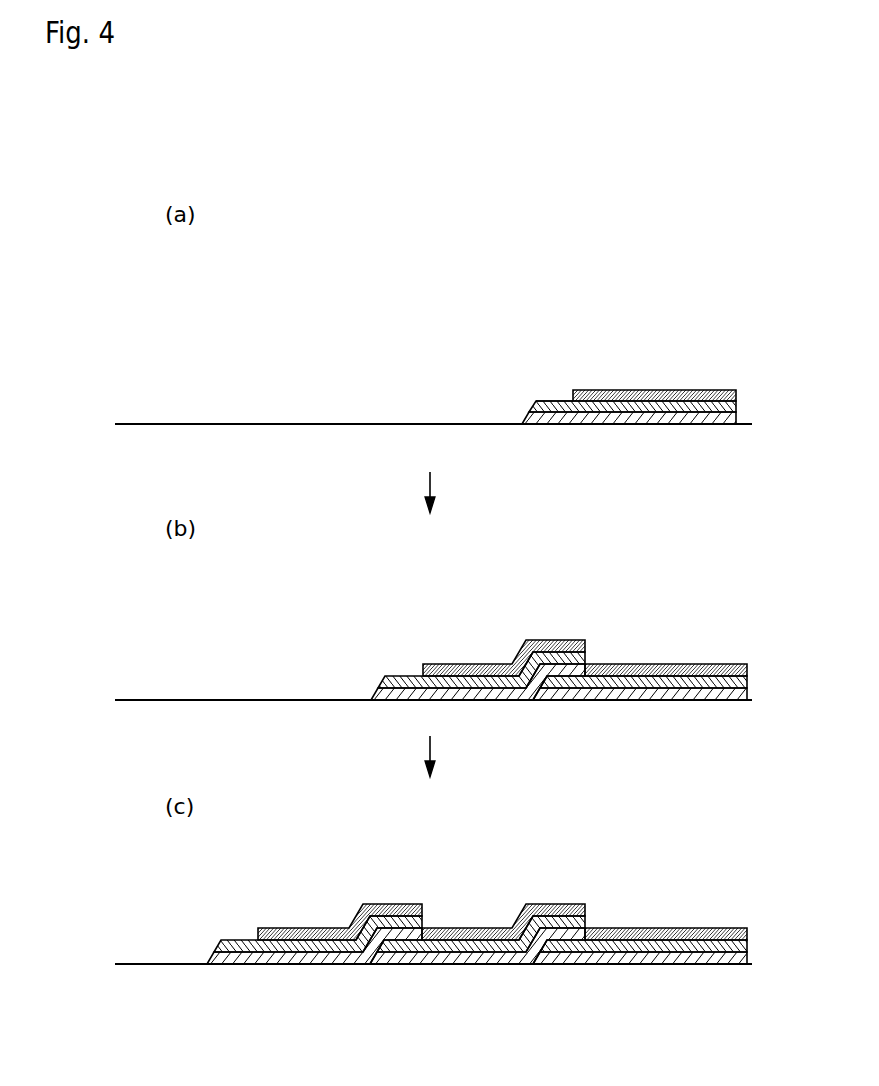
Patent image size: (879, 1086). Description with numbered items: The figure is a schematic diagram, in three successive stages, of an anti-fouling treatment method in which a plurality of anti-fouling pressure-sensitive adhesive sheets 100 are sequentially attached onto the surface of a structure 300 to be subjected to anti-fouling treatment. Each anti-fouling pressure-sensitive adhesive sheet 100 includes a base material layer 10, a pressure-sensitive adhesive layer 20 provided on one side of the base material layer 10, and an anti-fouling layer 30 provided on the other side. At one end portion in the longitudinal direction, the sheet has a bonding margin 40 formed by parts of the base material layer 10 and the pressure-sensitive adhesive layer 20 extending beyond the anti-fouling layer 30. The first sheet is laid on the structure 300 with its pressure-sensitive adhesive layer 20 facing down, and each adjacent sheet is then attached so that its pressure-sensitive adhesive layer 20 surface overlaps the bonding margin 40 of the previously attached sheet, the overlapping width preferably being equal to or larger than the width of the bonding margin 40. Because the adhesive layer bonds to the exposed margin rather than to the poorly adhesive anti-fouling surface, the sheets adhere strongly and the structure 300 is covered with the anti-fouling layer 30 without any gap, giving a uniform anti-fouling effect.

The anti-fouling pressure-sensitive adhesive sheet 100 is at (713, 343).
The base material layer 10 is at (737, 403).
The pressure-sensitive adhesive layer 20 is at (737, 418).
The anti-fouling layer 30 is at (737, 392).
The bonding margin 40 is at (552, 400).
The structure 300 is at (180, 423).